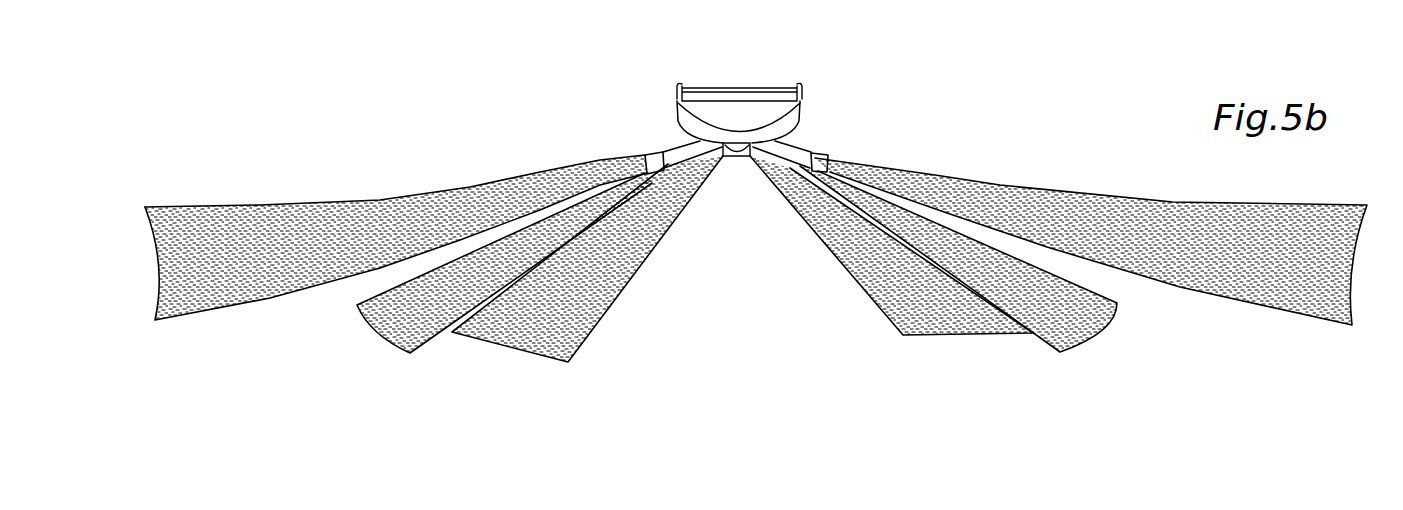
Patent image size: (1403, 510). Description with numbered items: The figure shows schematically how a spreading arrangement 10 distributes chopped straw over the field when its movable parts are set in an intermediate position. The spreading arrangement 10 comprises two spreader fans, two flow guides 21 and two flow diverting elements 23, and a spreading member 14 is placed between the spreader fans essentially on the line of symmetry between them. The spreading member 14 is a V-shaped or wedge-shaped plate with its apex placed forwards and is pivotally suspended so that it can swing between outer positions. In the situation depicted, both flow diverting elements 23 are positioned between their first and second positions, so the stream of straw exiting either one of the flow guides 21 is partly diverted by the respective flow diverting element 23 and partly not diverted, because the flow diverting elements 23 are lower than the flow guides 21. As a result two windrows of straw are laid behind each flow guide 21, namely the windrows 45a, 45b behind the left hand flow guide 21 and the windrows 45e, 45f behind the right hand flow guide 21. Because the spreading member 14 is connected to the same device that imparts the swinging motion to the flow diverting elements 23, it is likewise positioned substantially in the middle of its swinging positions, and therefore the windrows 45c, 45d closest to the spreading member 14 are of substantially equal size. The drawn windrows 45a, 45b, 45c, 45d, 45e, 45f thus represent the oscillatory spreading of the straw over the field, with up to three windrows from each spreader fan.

The spreading arrangement 10 is at (766, 59).
The spreading member 14 is at (733, 142).
The flow guide 21 is at (670, 153).
The flow diverting element 23 is at (646, 153).
The windrow 45a is at (337, 223).
The windrow 45b is at (390, 328).
The windrow 45c is at (596, 299).
The windrow 45d is at (892, 295).
The windrow 45e is at (1068, 327).
The windrow 45f is at (1268, 270).